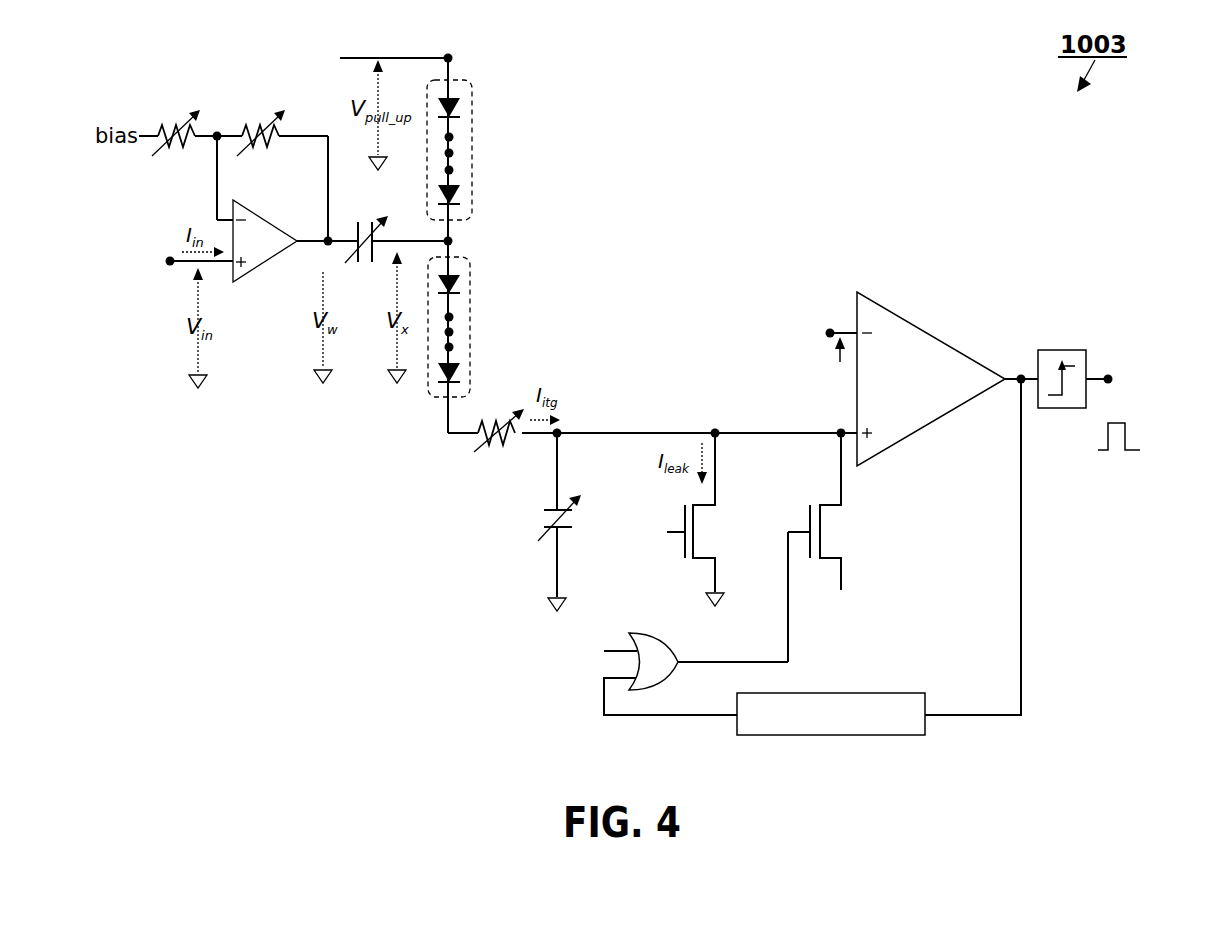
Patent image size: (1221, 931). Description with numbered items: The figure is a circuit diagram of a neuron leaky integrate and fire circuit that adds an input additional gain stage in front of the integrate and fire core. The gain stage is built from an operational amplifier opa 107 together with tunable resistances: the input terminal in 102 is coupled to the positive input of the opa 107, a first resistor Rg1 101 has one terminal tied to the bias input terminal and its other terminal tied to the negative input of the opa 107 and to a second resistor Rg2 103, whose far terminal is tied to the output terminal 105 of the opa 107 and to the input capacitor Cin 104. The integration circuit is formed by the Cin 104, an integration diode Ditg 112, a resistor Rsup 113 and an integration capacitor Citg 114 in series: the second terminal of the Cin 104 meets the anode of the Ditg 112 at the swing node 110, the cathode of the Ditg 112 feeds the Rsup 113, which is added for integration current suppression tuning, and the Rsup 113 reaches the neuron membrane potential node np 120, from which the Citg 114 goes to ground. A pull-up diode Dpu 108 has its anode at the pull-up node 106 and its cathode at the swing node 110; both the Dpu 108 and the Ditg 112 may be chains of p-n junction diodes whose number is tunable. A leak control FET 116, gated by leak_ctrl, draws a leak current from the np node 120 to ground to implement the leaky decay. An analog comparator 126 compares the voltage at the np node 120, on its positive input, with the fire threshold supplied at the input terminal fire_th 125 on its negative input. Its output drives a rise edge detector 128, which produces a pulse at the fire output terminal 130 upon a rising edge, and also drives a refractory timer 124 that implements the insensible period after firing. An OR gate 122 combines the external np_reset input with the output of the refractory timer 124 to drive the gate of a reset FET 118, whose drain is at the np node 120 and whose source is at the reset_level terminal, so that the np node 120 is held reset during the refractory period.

The first resistor Rg1 101 is at (190, 154).
The input terminal in 102 is at (170, 268).
The second resistor Rg2 103 is at (268, 153).
The input capacitor Cin 104 is at (370, 270).
The output terminal of the opa 105 is at (323, 270).
The pull-up node 106 is at (448, 57).
The operational amplifier opa 107 is at (275, 258).
The pull-up diode Dpu 108 is at (472, 145).
The swing node 110 is at (448, 240).
The integration diode Ditg 112 is at (470, 300).
The resistor Rsup 113 is at (496, 412).
The integration capacitor Citg 114 is at (572, 500).
The leak control FET 116 is at (698, 530).
The reset FET 118 is at (826, 500).
The neuron membrane potential node np 120 is at (716, 432).
The OR gate 122 is at (645, 636).
The refractory timer 124 is at (912, 692).
The input terminal fire_th 125 is at (830, 331).
The analog comparator 126 is at (930, 328).
The rise edge detector 128 is at (1060, 350).
The fire output terminal 130 is at (1108, 377).